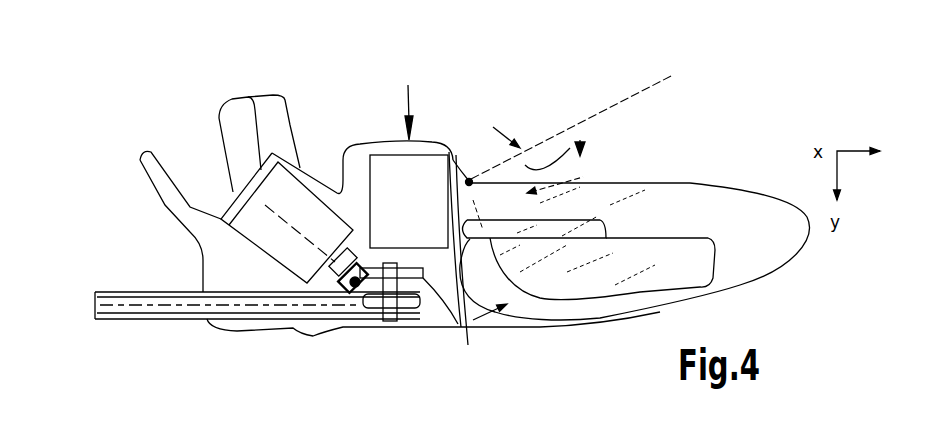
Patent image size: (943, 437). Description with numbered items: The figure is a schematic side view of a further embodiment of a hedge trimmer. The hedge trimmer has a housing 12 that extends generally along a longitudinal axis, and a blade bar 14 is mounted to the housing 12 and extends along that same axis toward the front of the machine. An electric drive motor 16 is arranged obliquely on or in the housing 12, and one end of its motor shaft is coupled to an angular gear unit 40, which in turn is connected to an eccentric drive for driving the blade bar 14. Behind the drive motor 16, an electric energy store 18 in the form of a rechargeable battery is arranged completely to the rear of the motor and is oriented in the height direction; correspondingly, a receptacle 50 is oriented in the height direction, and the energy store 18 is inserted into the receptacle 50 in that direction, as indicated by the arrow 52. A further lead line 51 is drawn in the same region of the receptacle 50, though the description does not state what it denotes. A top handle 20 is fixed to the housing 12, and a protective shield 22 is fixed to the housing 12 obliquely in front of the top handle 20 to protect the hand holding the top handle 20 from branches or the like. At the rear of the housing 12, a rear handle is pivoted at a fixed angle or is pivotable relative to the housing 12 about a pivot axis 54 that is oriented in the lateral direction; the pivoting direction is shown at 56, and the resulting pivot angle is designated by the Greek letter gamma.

The housing 12 is at (427, 320).
The blade bar 14 is at (123, 319).
The electric drive motor 16 is at (300, 260).
The electric energy store 18 is at (413, 207).
The top handle 20 is at (258, 117).
The protective shield 22 is at (143, 153).
The angular gear unit 40 is at (468, 345).
The receptacle 50 is at (387, 142).
The optical axis 51 is at (469, 179).
The arrow 52 is at (405, 106).
The pivot axis 54 is at (470, 179).
The pivoting direction 56 is at (490, 321).